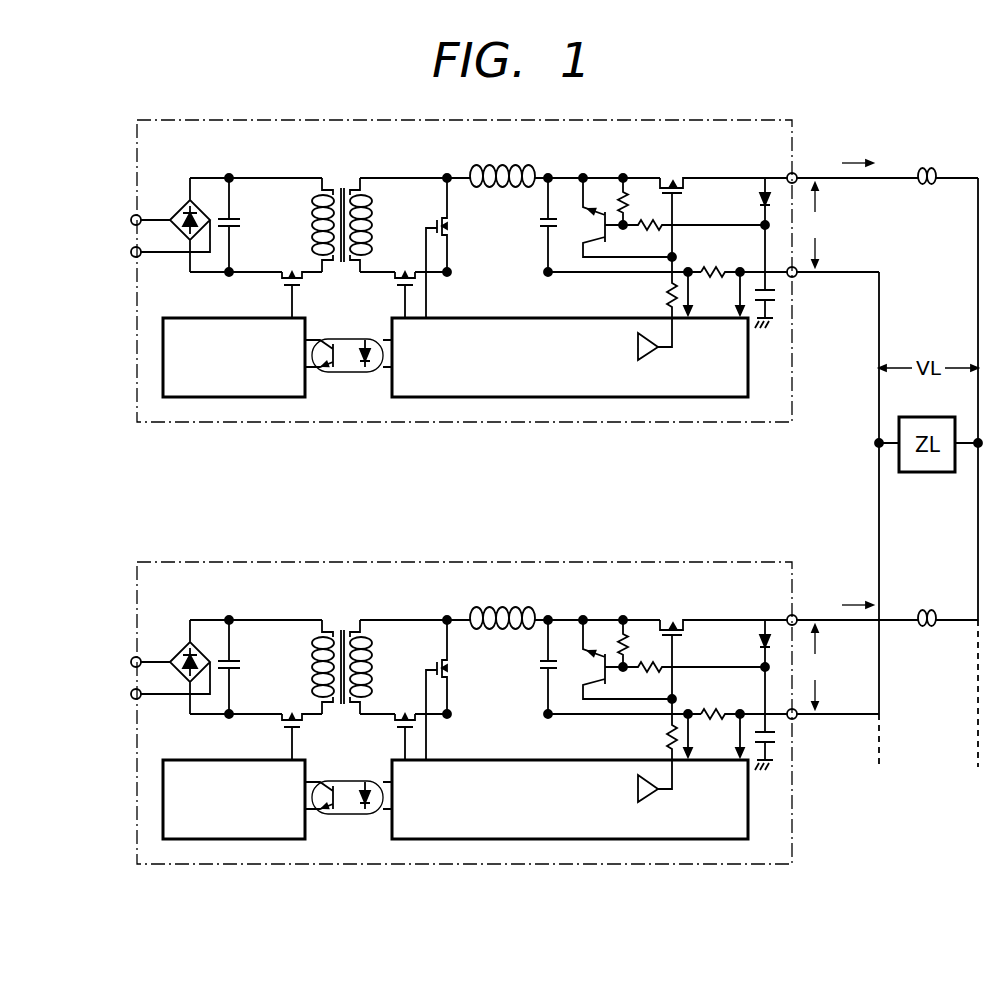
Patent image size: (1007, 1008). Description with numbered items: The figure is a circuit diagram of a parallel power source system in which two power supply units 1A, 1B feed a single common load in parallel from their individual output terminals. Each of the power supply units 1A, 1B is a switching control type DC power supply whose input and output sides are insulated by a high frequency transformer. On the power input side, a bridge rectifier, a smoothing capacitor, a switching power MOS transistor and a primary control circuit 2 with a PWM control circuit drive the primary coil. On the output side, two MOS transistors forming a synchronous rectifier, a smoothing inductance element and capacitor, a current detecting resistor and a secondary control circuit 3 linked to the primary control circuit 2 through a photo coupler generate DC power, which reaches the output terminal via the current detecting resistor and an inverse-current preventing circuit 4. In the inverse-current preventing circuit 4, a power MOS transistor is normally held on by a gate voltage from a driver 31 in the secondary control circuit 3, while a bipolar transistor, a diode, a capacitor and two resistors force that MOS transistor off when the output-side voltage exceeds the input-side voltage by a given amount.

The power supply unit 1A is at (422, 152).
The power supply unit 1B is at (525, 713).
The primary control circuit 2 is at (202, 398).
The secondary control circuit 3 is at (452, 398).
The inverse-current preventing circuit 4 is at (709, 173).
The driver 31 is at (658, 353).